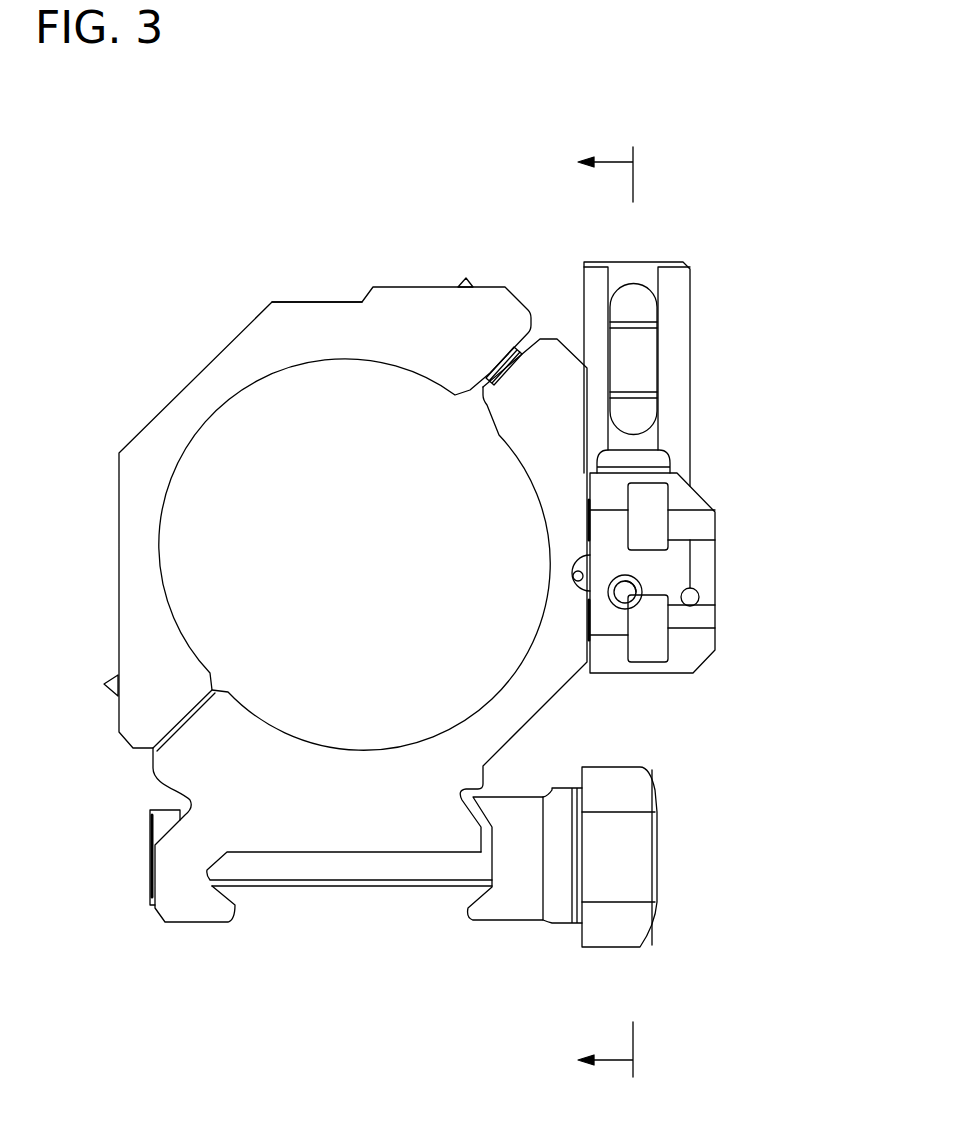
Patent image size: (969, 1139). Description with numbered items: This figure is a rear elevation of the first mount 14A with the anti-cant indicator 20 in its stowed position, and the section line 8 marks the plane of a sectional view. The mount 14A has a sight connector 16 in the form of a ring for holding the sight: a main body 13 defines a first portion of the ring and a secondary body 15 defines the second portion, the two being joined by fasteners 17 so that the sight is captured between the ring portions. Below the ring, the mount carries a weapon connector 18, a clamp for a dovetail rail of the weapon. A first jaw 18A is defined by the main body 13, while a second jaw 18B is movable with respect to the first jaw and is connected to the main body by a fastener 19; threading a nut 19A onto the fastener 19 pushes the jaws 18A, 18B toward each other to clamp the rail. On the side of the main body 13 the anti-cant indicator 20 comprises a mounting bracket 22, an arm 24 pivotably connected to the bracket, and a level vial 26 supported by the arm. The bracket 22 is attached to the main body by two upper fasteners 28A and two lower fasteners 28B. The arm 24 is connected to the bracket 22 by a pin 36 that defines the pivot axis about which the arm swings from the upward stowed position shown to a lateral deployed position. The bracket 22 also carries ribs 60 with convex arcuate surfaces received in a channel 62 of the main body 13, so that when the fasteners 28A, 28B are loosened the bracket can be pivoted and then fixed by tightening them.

The section line 8- 8 is at (620, 612).
The main body 13 is at (385, 770).
The first mount 14A is at (222, 212).
The secondary body 15 is at (305, 342).
The sight connector 16 is at (158, 393).
The fasteners 17 is at (462, 277).
The weapon connector 18 is at (182, 931).
The first jaw 18A is at (198, 897).
The second jaw 18B is at (518, 885).
The fastener 19 is at (333, 865).
The nut 19A is at (638, 851).
The anti-cant indicator 20 is at (705, 312).
The mounting bracket 22 is at (700, 655).
The arm 24 is at (675, 370).
The level vial 26 is at (637, 300).
The upper fasteners 28A is at (655, 500).
The lower fasteners 28B is at (648, 655).
The pin 36 is at (650, 580).
The ribs 60 is at (582, 558).
The channel 62 is at (575, 580).